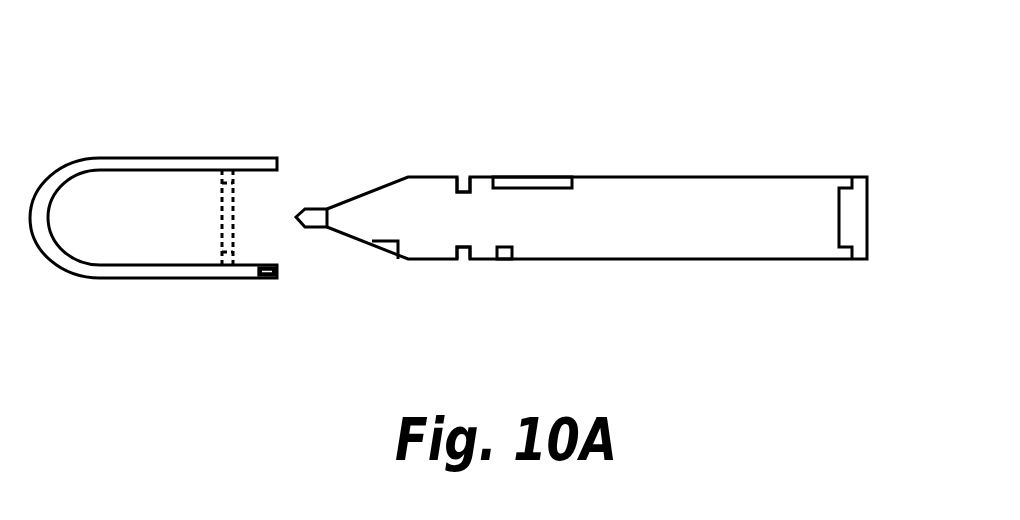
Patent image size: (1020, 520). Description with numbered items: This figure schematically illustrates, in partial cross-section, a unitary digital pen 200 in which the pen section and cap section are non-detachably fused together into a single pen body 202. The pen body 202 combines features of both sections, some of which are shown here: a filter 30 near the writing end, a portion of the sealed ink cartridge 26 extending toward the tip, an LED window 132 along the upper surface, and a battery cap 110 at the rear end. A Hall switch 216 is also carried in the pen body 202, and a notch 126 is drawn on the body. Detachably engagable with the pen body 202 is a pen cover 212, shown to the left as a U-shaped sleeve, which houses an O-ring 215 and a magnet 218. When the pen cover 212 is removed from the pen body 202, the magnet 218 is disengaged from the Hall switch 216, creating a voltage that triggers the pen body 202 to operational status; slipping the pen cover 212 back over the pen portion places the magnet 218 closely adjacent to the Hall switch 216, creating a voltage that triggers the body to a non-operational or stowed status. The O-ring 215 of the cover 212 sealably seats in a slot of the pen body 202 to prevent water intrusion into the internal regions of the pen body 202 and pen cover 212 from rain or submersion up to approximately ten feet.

The unitary digital pen 200 is at (148, 72).
The pen cover 212 is at (208, 258).
The O-ring 215 is at (227, 173).
The magnet 218 is at (258, 280).
The pen body 202 is at (775, 230).
The sealed ink cartridge 26 is at (312, 208).
The locking notch 126 is at (463, 190).
The LED window 132 is at (546, 187).
The filter 30 is at (390, 250).
The Hall switch 216 is at (505, 256).
The battery cap 110 is at (857, 193).